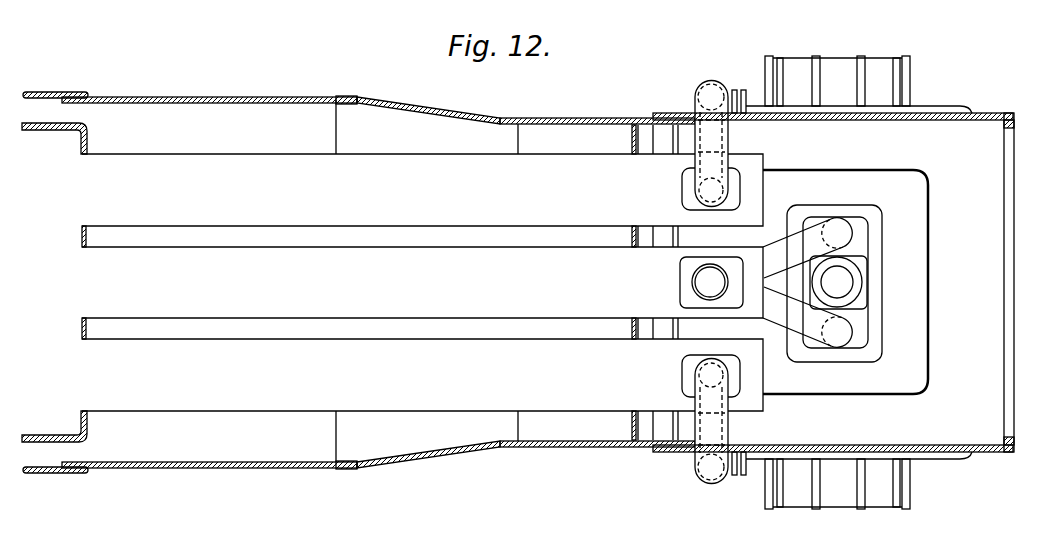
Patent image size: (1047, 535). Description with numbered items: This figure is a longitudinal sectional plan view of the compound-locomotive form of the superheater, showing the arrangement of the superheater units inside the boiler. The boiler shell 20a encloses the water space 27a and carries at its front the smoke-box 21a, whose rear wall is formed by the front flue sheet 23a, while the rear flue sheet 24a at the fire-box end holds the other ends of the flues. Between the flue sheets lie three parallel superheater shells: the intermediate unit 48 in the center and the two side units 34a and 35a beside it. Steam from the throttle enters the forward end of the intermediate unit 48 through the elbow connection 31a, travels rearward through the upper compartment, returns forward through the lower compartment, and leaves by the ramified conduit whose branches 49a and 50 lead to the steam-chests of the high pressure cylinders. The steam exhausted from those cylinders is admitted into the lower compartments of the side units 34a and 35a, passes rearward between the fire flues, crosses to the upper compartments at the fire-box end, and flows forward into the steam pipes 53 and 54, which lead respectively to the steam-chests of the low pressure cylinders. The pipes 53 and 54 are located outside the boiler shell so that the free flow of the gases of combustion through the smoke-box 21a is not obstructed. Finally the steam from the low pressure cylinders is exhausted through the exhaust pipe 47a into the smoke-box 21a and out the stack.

The boiler shell 20a is at (565, 110).
The smoke-box 21a is at (833, 282).
The front flue sheet 23a is at (637, 427).
The rear flue sheet 24a is at (83, 423).
The water space 27a is at (507, 281).
The elbow connection 31a is at (711, 282).
The side superheater unit 34a is at (422, 375).
The side superheater unit 35a is at (422, 190).
The exhaust pipe 47a is at (862, 284).
The intermediate superheater unit 48 is at (422, 282).
The steam conduit branch 49a is at (807, 317).
The steam conduit branch 50 is at (807, 248).
The steam pipe 53 is at (712, 483).
The steam pipe 54 is at (709, 81).